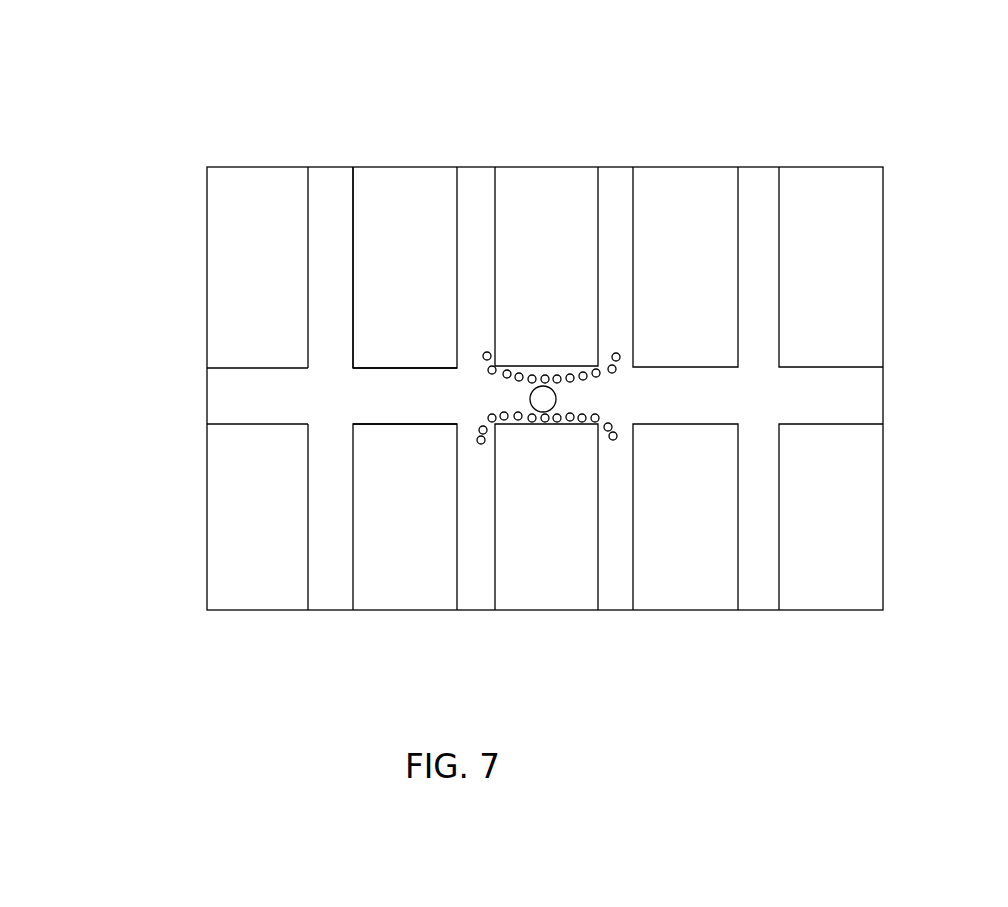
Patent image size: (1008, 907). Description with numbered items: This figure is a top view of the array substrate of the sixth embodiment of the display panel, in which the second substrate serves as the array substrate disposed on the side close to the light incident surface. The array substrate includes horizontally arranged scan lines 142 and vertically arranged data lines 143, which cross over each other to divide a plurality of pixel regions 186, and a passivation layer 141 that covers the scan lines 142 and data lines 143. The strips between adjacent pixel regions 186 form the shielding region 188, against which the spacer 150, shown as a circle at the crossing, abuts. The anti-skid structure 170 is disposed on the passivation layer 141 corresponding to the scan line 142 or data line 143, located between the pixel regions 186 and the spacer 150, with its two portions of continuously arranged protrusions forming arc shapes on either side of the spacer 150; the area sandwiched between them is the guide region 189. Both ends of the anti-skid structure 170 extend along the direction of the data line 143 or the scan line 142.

The passivation layer 141 is at (358, 405).
The scan line 142 is at (248, 397).
The data line 143 is at (338, 298).
The shielding region 188 is at (195, 364).
The pixel region 186 is at (550, 245).
The guide region 189 is at (595, 388).
The spacer 150 is at (550, 388).
The anti-skid structure 170 is at (647, 234).